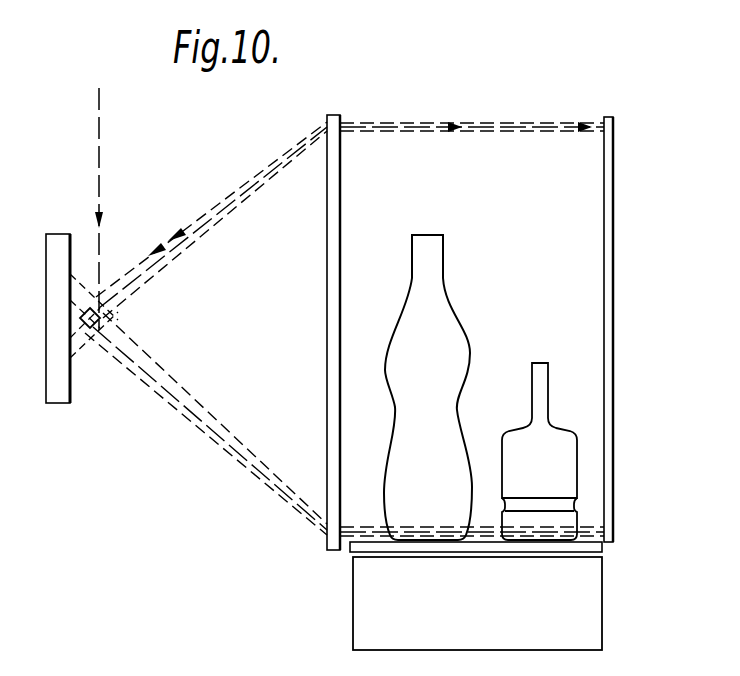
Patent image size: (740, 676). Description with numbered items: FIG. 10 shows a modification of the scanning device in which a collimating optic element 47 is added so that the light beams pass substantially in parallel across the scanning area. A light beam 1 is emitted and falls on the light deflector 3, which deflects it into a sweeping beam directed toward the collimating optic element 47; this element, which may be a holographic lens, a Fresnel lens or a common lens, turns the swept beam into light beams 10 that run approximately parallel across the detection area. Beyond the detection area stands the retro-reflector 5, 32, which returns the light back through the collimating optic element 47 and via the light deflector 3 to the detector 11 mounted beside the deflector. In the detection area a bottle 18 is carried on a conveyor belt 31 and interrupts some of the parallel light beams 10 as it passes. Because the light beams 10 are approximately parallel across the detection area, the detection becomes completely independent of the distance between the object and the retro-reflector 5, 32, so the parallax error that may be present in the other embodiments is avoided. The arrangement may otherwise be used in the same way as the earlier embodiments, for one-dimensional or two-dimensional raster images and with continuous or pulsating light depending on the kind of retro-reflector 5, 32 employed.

The light beam 1 is at (99, 150).
The light beams 10 is at (216, 226).
The light deflector 3 is at (90, 336).
The detector 11 is at (58, 395).
The collimating optic element 47 is at (334, 163).
The retro-reflector 5 is at (645, 329).
The retro-reflector 32 is at (612, 322).
The bottle 18 is at (535, 393).
The conveyor belt 31 is at (403, 544).